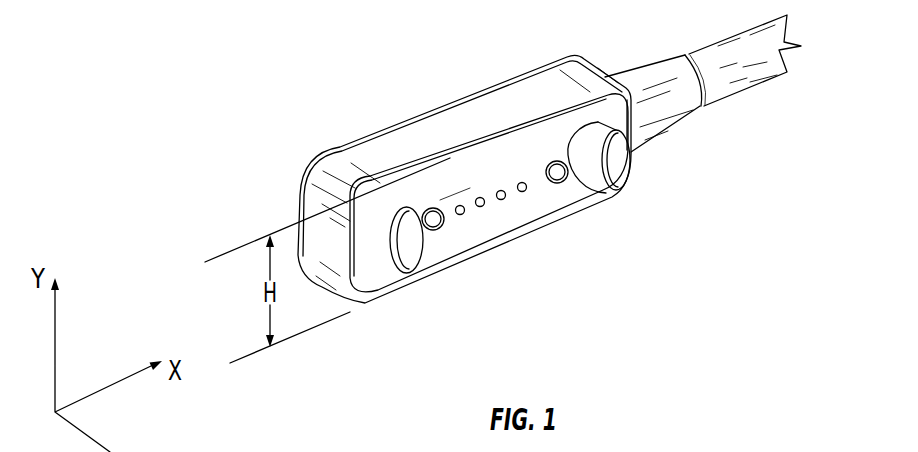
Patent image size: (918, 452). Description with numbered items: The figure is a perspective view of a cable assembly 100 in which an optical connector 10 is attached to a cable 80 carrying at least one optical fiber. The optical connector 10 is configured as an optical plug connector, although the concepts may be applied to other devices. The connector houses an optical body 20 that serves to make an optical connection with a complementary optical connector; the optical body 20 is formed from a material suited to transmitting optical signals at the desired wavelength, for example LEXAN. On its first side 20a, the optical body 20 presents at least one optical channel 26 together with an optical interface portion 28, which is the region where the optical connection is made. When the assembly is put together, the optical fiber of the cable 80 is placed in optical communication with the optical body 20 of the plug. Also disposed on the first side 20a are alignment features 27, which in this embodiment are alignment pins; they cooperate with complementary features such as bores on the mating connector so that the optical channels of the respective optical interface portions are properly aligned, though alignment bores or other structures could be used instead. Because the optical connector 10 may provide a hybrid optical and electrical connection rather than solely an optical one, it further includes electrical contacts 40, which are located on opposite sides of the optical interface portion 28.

The cable assembly 100 is at (366, 81).
The optical connector 10 is at (437, 133).
The optical interface portion 28 is at (482, 183).
The optical body 20 is at (453, 247).
The first side 20a is at (443, 190).
The optical channel 26 is at (463, 214).
The alignment features 27 is at (402, 260).
The electrical contacts 40 is at (436, 230).
The cable 80 is at (745, 80).